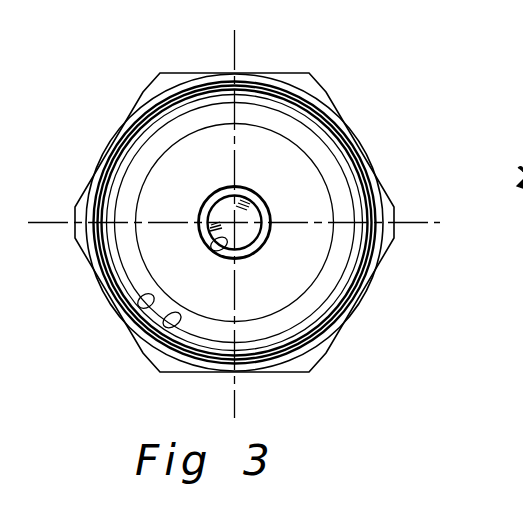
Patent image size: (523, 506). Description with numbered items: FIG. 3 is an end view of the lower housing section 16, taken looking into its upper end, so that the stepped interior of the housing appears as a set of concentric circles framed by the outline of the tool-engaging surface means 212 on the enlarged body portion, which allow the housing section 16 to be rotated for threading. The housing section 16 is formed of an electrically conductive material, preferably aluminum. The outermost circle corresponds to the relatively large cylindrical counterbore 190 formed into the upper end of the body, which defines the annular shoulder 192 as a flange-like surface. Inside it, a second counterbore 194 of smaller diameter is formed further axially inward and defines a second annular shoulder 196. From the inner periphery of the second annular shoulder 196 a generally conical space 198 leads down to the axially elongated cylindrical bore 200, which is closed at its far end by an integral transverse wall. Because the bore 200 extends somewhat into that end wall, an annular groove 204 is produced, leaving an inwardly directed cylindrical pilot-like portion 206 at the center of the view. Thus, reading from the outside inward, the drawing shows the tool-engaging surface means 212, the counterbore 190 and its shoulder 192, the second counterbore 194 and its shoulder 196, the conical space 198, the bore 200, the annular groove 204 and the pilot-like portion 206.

The lower housing section 16 is at (272, 58).
The counterbore 190 is at (176, 318).
The annular shoulder 192 is at (339, 294).
The second counterbore 194 is at (152, 310).
The second annular shoulder 196 is at (333, 262).
The conical space 198 is at (222, 146).
The cylindrical bore 200 is at (216, 251).
The annular groove 204 is at (262, 239).
The pilot-like portion 206 is at (247, 207).
The tool-engaging surface means 212 is at (338, 103).